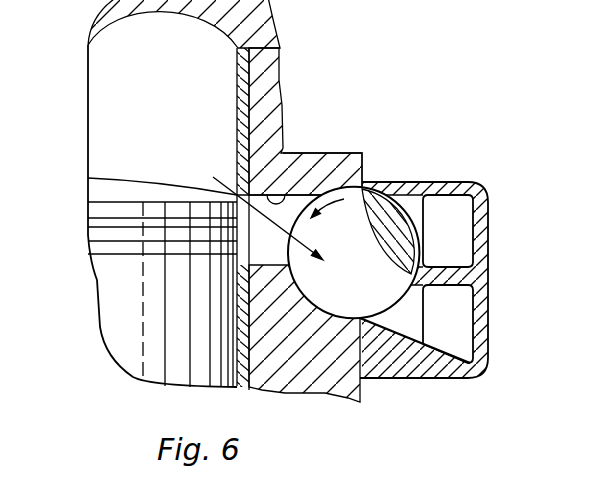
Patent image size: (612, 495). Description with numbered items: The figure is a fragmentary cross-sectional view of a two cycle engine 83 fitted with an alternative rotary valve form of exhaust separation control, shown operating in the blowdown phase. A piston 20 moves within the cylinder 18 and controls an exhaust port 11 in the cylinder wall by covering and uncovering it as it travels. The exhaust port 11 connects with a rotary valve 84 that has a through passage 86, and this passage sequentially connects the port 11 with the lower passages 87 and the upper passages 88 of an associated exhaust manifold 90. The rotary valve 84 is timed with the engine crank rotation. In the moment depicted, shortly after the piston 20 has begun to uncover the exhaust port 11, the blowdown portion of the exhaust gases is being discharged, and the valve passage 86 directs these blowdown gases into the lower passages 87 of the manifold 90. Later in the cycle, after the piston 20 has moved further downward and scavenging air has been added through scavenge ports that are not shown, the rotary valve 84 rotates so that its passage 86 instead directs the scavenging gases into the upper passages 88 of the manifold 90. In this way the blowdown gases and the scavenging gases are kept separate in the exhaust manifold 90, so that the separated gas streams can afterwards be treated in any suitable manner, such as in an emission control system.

The exhaust port 11 is at (306, 156).
The cylinder 18 is at (236, 102).
The piston 20 is at (113, 297).
The engine 83 is at (294, 69).
The rotary valve 84 is at (416, 184).
The through passage 86 is at (367, 194).
The lower passages 87 is at (476, 328).
The upper passages 88 is at (474, 233).
The exhaust manifold 90 is at (458, 277).